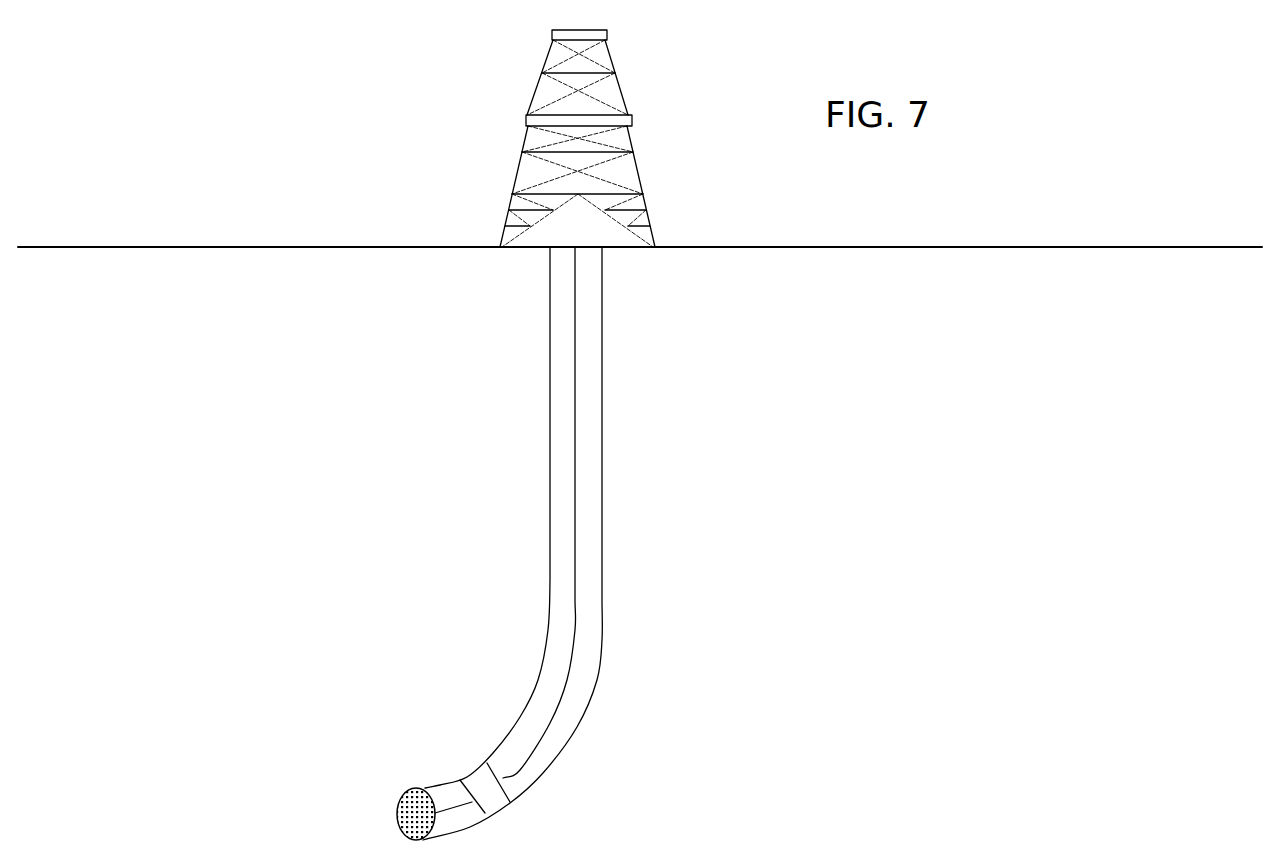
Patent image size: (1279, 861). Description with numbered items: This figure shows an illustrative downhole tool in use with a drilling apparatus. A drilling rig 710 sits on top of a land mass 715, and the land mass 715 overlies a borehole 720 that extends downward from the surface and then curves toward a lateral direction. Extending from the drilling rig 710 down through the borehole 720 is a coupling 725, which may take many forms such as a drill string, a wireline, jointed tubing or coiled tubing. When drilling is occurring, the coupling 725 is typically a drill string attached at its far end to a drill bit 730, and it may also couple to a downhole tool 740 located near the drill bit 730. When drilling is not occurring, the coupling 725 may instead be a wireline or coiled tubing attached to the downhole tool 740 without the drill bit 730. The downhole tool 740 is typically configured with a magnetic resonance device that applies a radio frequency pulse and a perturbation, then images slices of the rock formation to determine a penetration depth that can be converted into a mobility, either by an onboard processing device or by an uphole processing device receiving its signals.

The drilling rig 710 is at (557, 43).
The land mass 715 is at (280, 248).
The borehole 720 is at (602, 532).
The coupling 725 is at (575, 635).
The drill bit 730 is at (398, 815).
The downhole tool 740 is at (508, 802).